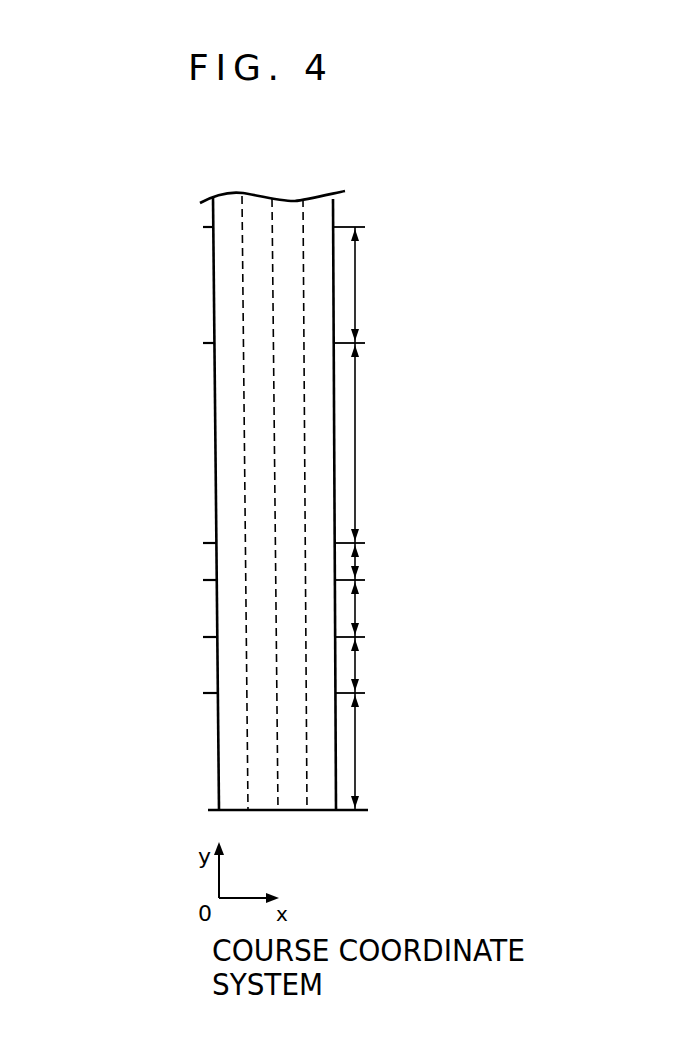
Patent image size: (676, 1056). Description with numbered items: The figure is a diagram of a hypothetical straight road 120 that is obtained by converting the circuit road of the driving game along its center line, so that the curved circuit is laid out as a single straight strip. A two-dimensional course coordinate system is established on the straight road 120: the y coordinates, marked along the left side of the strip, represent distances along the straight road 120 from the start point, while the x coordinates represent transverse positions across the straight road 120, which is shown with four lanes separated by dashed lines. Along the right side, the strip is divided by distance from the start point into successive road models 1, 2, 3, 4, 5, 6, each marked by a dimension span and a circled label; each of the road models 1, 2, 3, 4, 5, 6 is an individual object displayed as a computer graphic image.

The hypothetical straight road 120 is at (200, 440).
The road model 1 is at (373, 751).
The road model 2 is at (373, 665).
The road model 3 is at (373, 608).
The road model 4 is at (373, 561).
The road model 5 is at (372, 443).
The road model 6 is at (371, 285).